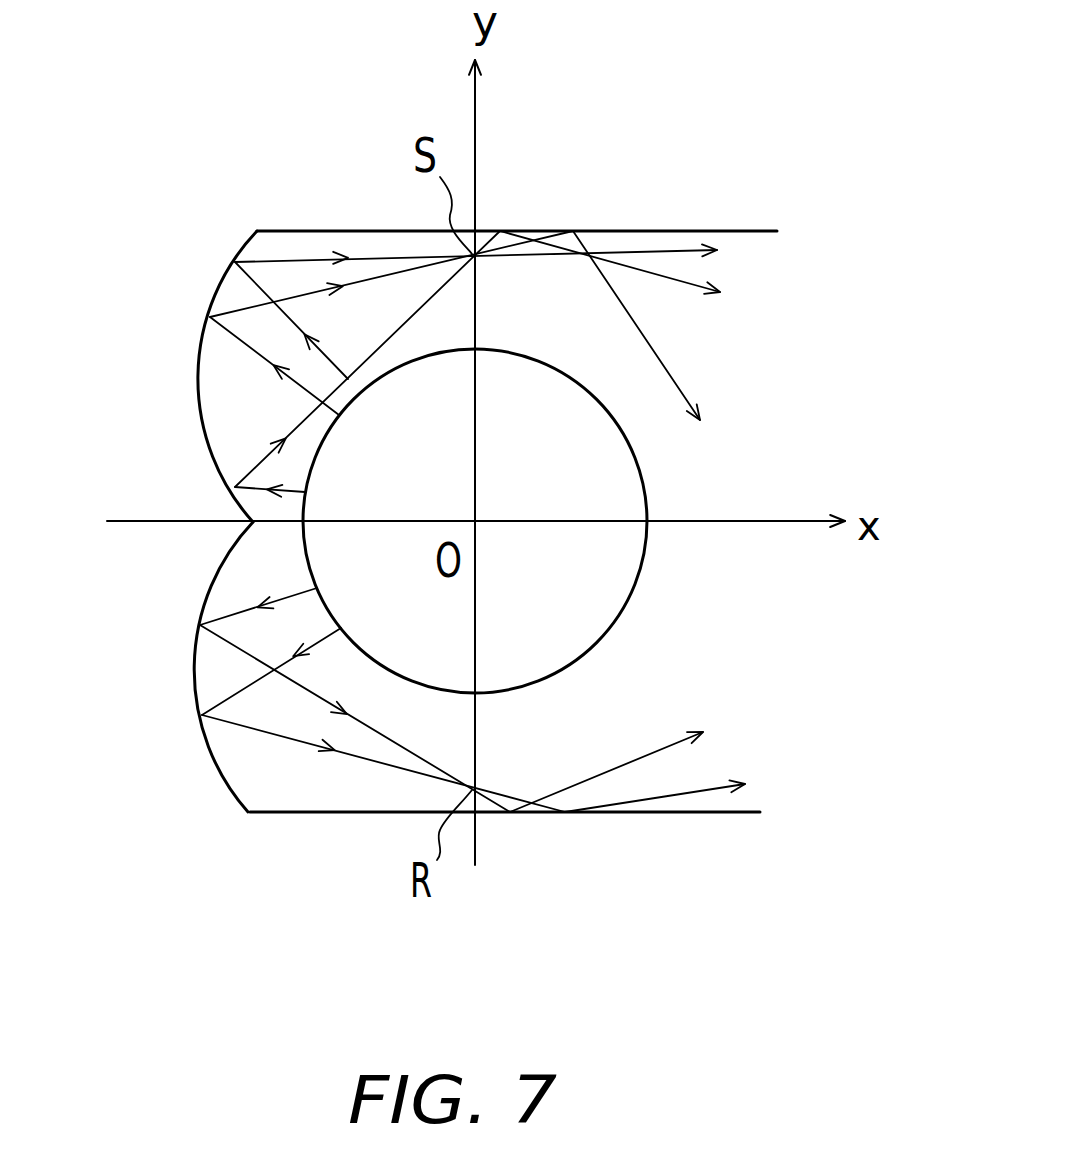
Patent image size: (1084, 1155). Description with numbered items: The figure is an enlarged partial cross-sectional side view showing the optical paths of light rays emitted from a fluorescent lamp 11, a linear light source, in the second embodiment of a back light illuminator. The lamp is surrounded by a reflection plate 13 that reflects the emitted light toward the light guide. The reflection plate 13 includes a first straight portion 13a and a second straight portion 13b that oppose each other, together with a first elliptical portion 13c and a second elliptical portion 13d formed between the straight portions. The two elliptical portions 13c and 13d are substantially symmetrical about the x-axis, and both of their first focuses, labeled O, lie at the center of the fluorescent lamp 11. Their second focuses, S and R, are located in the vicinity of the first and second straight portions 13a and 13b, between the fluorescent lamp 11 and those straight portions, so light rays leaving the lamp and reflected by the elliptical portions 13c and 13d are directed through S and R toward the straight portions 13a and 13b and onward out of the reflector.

The fluorescent lamp 11 is at (627, 608).
The reflection plate 13 is at (220, 242).
The first straight portion 13a is at (643, 231).
The second straight portion 13b is at (650, 813).
The first elliptical portion 13c is at (198, 382).
The second elliptical portion 13d is at (195, 670).